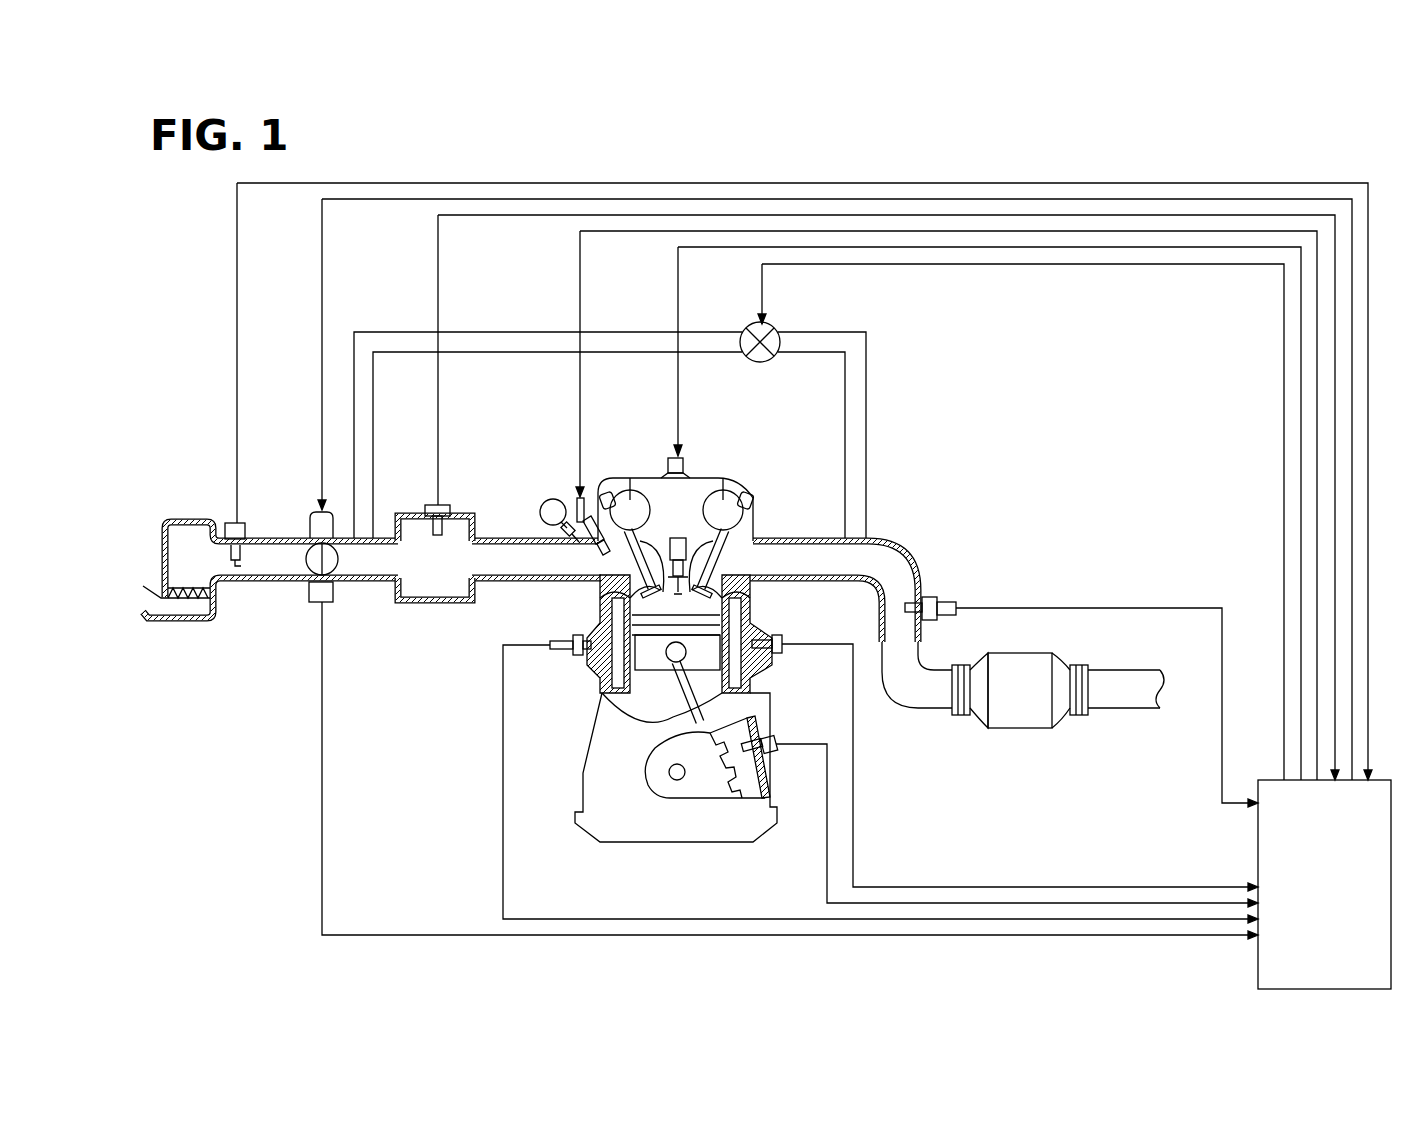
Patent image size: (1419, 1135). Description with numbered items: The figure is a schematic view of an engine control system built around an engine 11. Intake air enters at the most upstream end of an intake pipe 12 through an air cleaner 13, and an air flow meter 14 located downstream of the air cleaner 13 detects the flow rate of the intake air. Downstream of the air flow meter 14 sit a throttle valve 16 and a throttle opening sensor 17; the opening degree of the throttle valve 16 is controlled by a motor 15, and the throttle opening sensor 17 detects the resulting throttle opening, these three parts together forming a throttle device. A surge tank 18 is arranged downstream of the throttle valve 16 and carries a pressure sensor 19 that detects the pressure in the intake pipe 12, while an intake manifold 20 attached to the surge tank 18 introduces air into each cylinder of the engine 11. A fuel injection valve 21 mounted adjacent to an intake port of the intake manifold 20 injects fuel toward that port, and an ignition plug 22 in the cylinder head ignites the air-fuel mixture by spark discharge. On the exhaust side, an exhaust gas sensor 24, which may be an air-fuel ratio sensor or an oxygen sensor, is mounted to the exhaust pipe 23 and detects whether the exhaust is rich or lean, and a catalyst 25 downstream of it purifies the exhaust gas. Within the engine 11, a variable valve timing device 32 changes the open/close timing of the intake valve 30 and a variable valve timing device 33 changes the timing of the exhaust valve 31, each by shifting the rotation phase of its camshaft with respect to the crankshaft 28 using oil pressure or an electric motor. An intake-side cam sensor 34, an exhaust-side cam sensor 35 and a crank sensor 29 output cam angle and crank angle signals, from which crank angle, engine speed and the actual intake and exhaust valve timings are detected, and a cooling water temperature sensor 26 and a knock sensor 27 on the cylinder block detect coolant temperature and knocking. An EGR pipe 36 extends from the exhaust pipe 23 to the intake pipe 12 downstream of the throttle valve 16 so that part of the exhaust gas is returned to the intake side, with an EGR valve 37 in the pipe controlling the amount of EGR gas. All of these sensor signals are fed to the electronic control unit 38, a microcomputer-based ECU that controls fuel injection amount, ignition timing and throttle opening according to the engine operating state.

The engine 11 is at (720, 474).
The intake pipe 12 is at (276, 536).
The air cleaner 13 is at (186, 600).
The air flow meter 14 is at (231, 522).
The motor 15 is at (310, 512).
The throttle valve 16 is at (312, 556).
The throttle opening sensor 17 is at (335, 603).
The surge tank 18 is at (438, 605).
The pressure sensor 19 is at (428, 505).
The intake manifold 20 is at (524, 532).
The fuel injection valve 21 is at (586, 490).
The ignition plug 22 is at (692, 510).
The exhaust pipe 23 is at (884, 538).
The exhaust gas sensor 24 is at (932, 596).
The catalyst 25 is at (1018, 653).
The cooling water temperature sensor 26 is at (570, 660).
The knock sensor 27 is at (785, 660).
The crankshaft 28 is at (676, 782).
The crank sensor 29 is at (778, 752).
The intake valve 30 is at (607, 598).
The exhaust valve 31 is at (745, 597).
The variable valve timing device 32 is at (633, 487).
The variable valve timing device 33 is at (746, 490).
The intake-side cam sensor 34 is at (606, 490).
The exhaust-side cam sensor 35 is at (753, 500).
The EGR pipe 36 is at (495, 330).
The EGR valve 37 is at (778, 332).
The electronic control unit 38 is at (1258, 960).